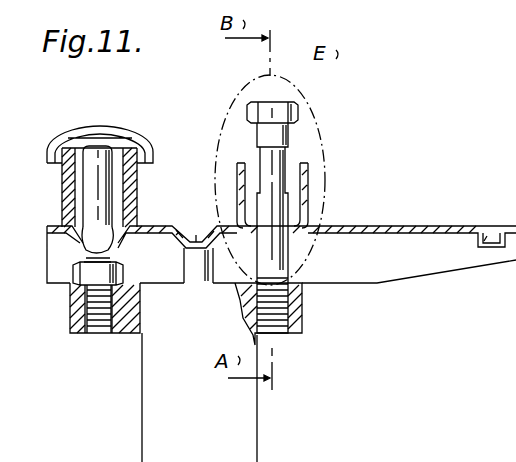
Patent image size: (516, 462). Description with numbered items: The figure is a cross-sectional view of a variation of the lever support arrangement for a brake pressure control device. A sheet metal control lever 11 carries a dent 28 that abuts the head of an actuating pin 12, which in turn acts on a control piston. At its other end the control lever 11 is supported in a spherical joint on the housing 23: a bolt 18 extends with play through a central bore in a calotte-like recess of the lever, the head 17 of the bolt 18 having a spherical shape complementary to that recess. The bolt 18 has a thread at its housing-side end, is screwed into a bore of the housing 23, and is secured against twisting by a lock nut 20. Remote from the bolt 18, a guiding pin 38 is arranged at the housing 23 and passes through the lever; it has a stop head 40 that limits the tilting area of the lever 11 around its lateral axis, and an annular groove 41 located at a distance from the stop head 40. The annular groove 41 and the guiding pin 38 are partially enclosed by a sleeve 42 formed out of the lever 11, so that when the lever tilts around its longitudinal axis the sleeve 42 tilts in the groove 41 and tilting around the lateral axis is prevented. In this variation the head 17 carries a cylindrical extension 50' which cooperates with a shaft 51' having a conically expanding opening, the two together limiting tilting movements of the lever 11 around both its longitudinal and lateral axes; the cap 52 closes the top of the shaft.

The control lever 11 is at (408, 228).
The actuating pin 12 is at (197, 270).
The head 17 is at (92, 233).
The bolt 18 is at (86, 264).
The lock nut 20 is at (78, 284).
The housing 23 is at (222, 434).
The dent 28 is at (198, 232).
The guiding pin 38 is at (284, 262).
The stop head 40 is at (298, 113).
The annular groove 41 is at (285, 156).
The sleeve 42 is at (305, 190).
The extension 50' is at (76, 159).
The shaft 51' is at (71, 187).
The knob cap 52 is at (116, 130).